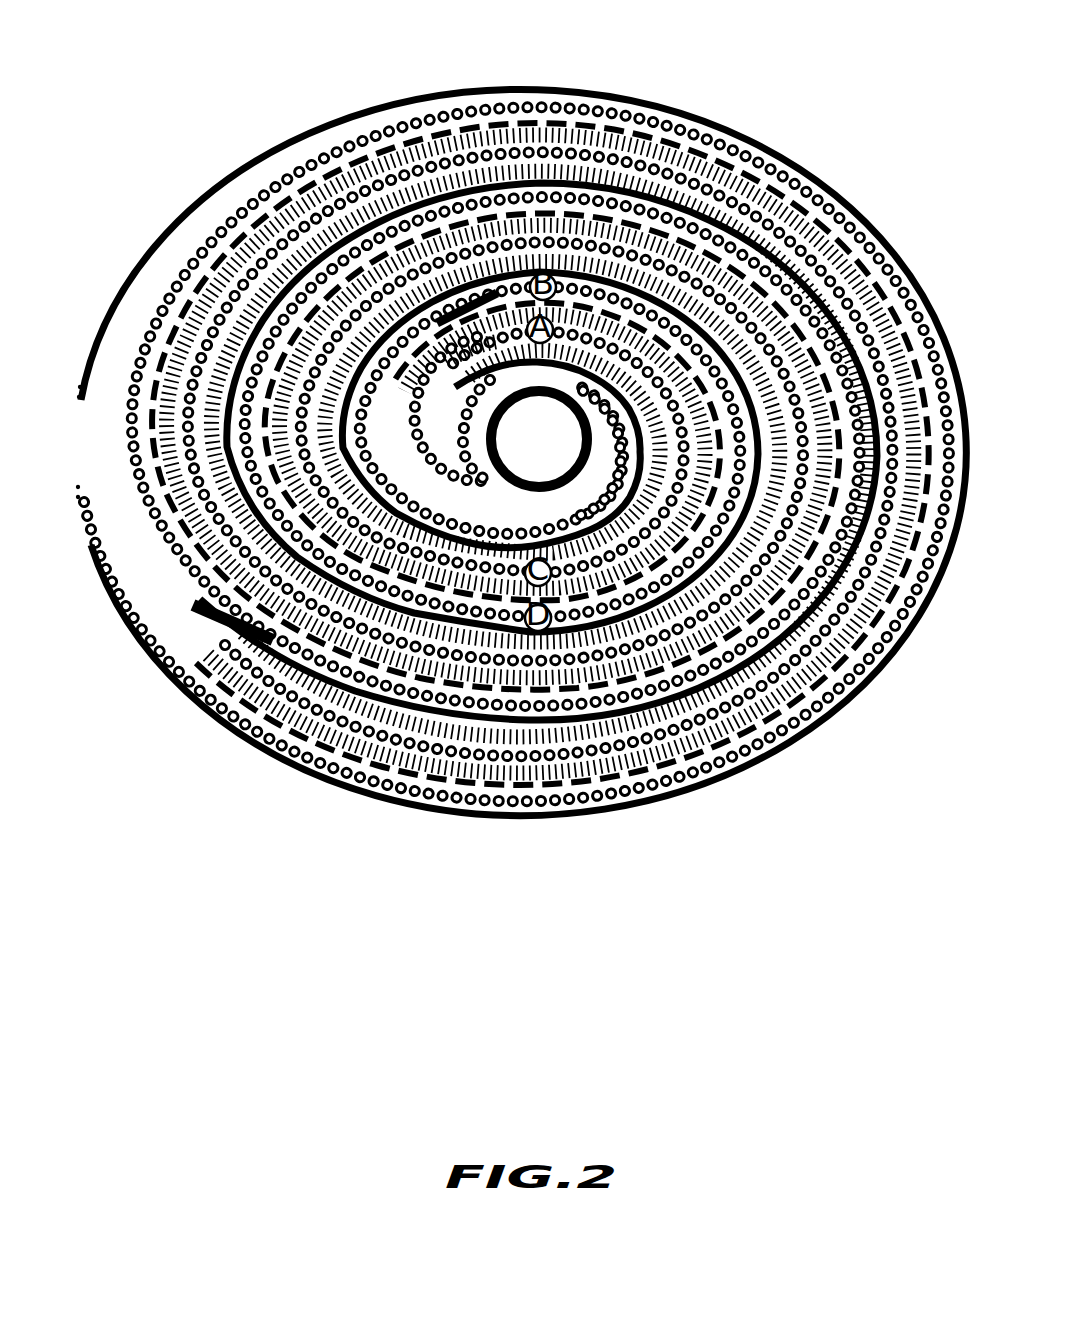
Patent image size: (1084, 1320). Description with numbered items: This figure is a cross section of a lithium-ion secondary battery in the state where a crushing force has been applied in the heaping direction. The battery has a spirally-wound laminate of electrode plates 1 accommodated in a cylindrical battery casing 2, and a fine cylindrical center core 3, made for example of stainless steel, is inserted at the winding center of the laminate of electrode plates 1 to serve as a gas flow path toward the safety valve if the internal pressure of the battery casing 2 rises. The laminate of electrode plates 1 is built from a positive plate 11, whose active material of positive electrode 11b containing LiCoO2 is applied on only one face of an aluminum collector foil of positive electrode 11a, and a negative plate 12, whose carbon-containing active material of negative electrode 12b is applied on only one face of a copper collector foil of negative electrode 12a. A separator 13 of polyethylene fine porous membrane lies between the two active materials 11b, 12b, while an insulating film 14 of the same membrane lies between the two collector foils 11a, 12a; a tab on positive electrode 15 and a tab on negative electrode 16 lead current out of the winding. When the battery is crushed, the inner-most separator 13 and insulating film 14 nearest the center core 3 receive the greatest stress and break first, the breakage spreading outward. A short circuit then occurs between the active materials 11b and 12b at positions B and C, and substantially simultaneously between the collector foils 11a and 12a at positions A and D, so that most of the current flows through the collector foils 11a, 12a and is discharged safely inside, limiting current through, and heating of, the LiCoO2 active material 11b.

The laminate of electrode plates 1 is at (153, 590).
The battery casing 2 is at (733, 133).
The center core 3 is at (543, 488).
The positive plate 11 is at (287, 897).
The collector foil of positive electrode 11a is at (372, 780).
The active material of positive electrode 11b is at (418, 778).
The negative plate 12 is at (870, 893).
The collector foil of negative electrode 12a is at (760, 700).
The active material of negative electrode 12b is at (698, 700).
The separator 13 is at (447, 362).
The insulating film 14 is at (207, 227).
The tab on positive electrode 15 is at (452, 292).
The tab on negative electrode 16 is at (222, 648).